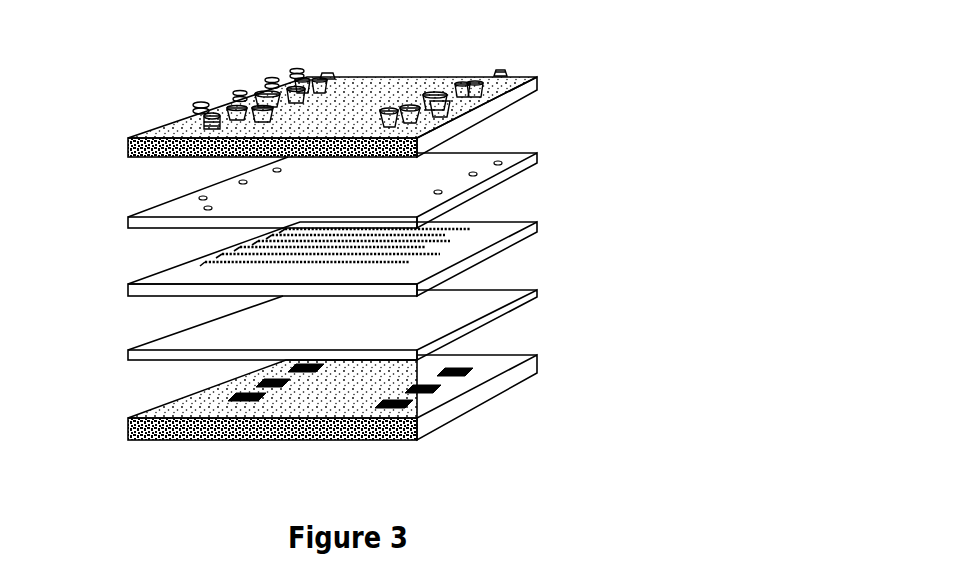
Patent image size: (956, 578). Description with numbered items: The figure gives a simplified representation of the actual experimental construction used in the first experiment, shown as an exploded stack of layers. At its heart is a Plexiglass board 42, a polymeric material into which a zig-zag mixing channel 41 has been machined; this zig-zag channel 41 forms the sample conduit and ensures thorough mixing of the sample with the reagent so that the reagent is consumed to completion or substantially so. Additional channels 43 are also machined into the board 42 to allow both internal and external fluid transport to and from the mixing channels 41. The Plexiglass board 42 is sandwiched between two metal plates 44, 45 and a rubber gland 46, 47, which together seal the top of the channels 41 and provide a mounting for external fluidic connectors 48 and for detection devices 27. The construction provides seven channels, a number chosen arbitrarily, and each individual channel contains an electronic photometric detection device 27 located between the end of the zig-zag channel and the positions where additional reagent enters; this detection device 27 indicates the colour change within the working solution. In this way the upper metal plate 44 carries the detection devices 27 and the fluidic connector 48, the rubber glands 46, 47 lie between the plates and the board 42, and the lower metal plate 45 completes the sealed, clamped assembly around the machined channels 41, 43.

The electronic photometric detection device 27 is at (327, 73).
The zig-zag mixing channel 41 is at (483, 222).
The Plexiglass board 42 is at (452, 275).
The additional channels 43 is at (440, 247).
The metal plate 44 is at (528, 95).
The metal plate 45 is at (497, 393).
The rubber gland 46 is at (527, 160).
The rubber gland 47 is at (530, 300).
The external fluidic connector 48 is at (502, 70).